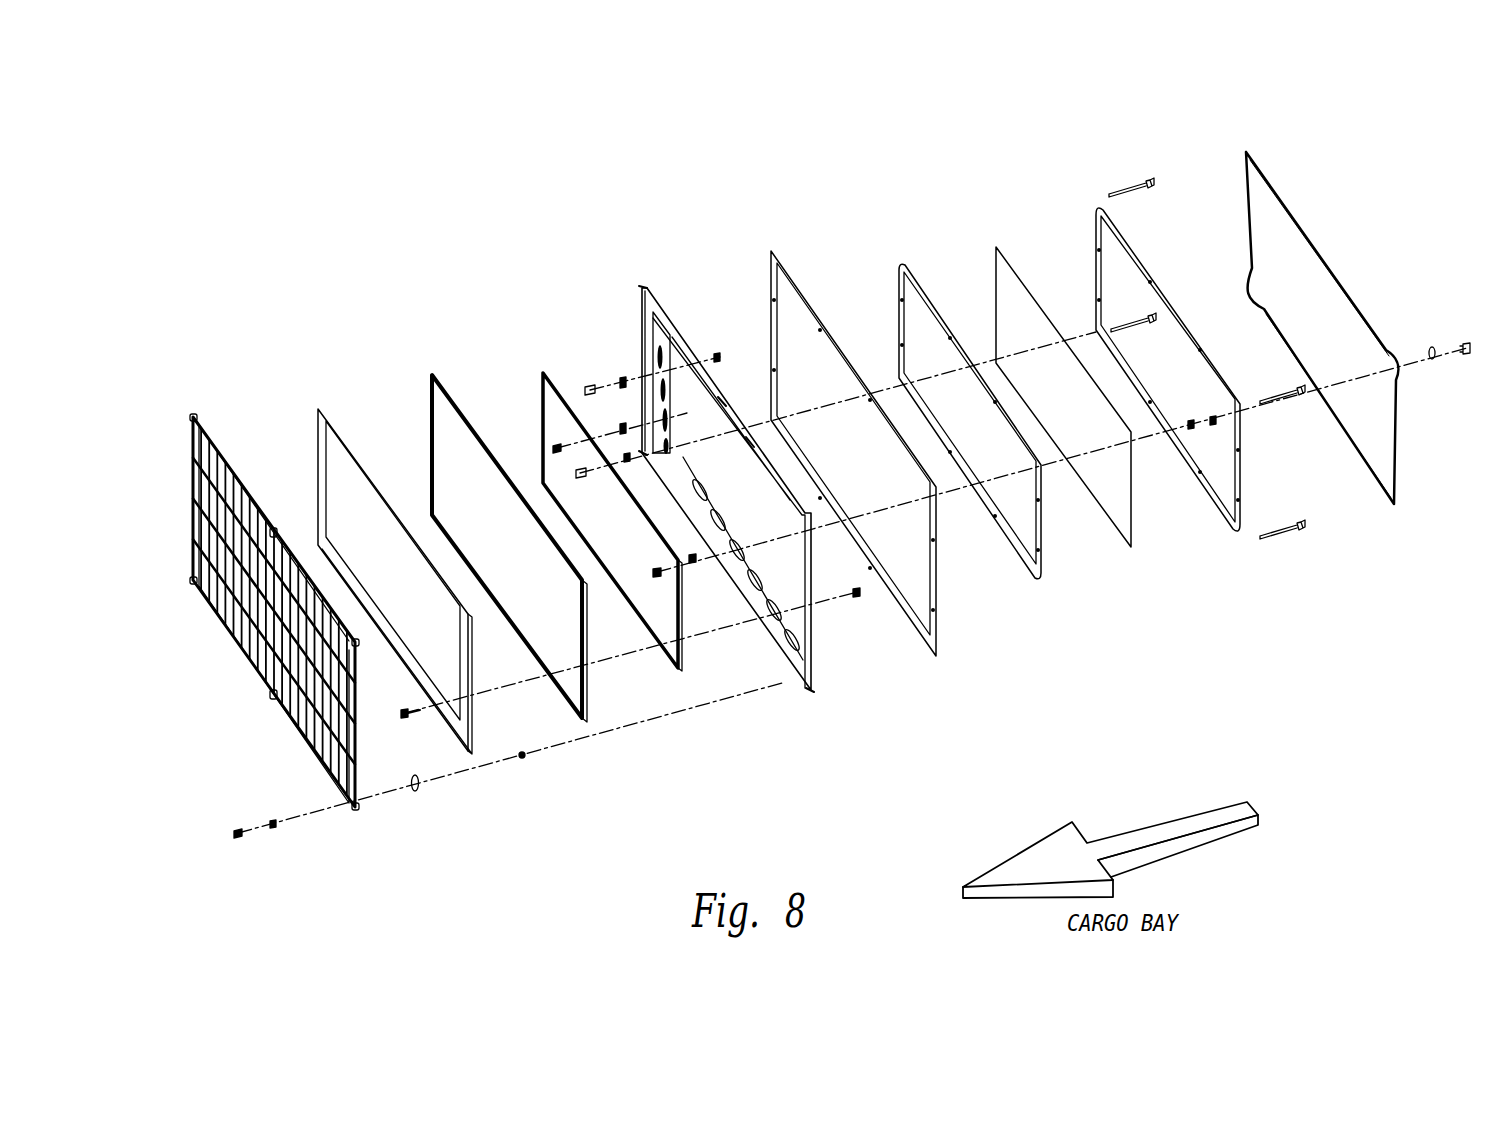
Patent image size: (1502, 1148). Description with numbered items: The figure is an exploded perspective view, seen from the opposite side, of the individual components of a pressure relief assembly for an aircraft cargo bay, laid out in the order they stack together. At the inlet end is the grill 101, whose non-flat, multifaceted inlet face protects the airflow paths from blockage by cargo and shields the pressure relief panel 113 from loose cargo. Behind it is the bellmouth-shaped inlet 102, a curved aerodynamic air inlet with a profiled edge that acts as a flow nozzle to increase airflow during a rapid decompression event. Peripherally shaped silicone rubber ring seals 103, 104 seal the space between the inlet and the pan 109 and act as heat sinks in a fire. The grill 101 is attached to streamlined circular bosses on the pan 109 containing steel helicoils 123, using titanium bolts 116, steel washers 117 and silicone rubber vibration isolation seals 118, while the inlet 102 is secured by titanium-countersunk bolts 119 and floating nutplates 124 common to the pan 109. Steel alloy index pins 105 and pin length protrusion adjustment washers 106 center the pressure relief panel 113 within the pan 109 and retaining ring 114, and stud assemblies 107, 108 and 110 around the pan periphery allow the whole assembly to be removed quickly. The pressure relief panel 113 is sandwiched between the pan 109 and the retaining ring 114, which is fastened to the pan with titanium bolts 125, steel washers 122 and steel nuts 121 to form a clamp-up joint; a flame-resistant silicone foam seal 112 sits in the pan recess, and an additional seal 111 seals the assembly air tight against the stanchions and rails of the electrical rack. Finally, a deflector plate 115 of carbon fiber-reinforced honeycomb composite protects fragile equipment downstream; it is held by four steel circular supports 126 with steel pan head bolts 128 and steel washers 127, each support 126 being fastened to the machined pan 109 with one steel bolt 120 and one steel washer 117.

The grill 101 is at (192, 450).
The bellmouth-shaped inlet 102 is at (317, 455).
The silicone rubber ring seal 103 is at (432, 440).
The silicone rubber ring seal 104 is at (543, 417).
The index pin 105 is at (557, 447).
The pin length protrusion adjustment washer 106 is at (623, 428).
The stud assembly 107 is at (590, 390).
The stud assembly 108 is at (623, 382).
The pan 109 is at (645, 287).
The stud assembly 110 is at (717, 357).
The seal 111 is at (803, 292).
The rubber seal 112 is at (898, 262).
The pressure relief panel 113 is at (996, 245).
The retaining ring 114 is at (1093, 205).
The deflector plate 115 is at (1242, 152).
The titanium bolt 116 is at (238, 837).
The steel washer 117 is at (275, 827).
The silicone rubber vibration isolation seal 118 is at (417, 792).
The titanium-countersunk bolt 119 is at (412, 717).
The steel bolt 120 is at (580, 475).
The steel nut 121 is at (657, 573).
The steel washer 122 is at (692, 558).
The steel helicoil 123 is at (525, 758).
The floating nutplate 124 is at (857, 592).
The titanium bolt 125 is at (1213, 422).
The steel circular support 126 is at (1279, 398).
The steel washer 127 is at (1433, 353).
The steel pan head bolt 128 is at (1470, 350).